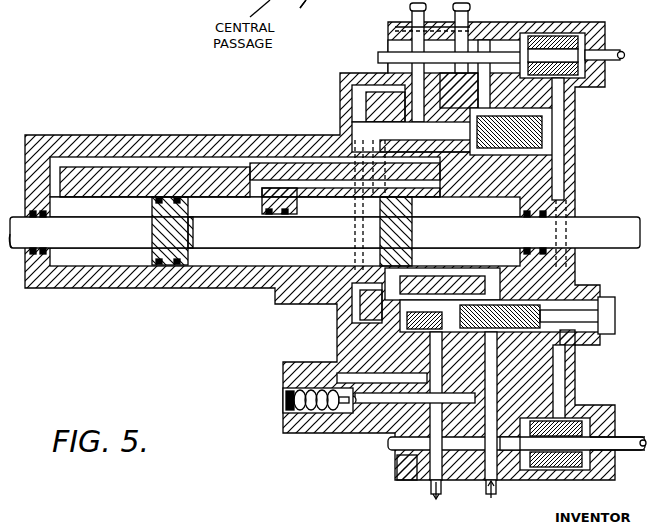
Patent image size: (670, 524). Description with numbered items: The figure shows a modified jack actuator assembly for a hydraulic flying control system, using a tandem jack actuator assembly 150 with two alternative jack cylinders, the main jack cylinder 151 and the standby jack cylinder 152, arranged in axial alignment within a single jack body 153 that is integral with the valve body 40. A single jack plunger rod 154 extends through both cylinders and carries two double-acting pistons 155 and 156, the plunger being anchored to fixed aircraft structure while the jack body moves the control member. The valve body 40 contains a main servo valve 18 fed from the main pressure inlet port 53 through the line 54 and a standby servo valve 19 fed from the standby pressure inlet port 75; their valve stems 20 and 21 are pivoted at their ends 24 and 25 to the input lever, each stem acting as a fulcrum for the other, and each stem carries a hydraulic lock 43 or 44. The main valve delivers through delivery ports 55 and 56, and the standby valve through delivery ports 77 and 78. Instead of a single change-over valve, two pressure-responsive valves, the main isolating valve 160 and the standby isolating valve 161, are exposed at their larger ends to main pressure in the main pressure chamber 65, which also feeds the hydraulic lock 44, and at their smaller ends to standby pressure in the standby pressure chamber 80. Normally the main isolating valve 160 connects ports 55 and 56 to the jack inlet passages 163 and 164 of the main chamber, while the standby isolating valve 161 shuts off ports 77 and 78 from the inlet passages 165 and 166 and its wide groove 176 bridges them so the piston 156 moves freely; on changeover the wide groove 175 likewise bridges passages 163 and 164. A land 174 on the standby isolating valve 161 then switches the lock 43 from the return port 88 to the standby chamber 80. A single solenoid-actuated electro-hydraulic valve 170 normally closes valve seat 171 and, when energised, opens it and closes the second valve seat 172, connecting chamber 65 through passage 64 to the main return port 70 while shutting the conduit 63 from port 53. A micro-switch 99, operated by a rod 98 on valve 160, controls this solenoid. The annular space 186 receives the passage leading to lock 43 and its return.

The main servo valve 18 is at (415, 249).
The standby servo valve 19 is at (486, 45).
The valve stem 20 is at (620, 446).
The valve stem 21 is at (612, 56).
The valve stem end 24 is at (643, 440).
The valve stem end 25 is at (615, 58).
The valve body 40 is at (512, 25).
The hydraulic lock 43 is at (565, 458).
The hydraulic lock 44 is at (572, 38).
The main pressure inlet port 53 is at (445, 415).
The line 54 is at (302, 13).
The pressure fluid delivery port 55 is at (400, 400).
The pressure fluid delivery port 56 is at (505, 448).
The conduit 63 is at (372, 383).
The passage 64 is at (535, 378).
The main pressure chamber 65 is at (558, 163).
The main return port 70 is at (400, 465).
The standby pressure inlet port 75 is at (462, 30).
The delivery port 77 is at (485, 93).
The delivery port 78 is at (400, 78).
The standby pressure chamber 80 is at (352, 142).
The return port 88 is at (413, 40).
The rod 98 is at (568, 332).
The micro-switch 99 is at (615, 315).
The tandem jack actuator assembly 150 is at (176, 270).
The main jack cylinder 151 is at (552, 192).
The standby jack cylinder 152 is at (225, 272).
The jack body 153 is at (190, 160).
The jack plunger rod 154 is at (628, 213).
The piston 155 is at (402, 236).
The piston 156 is at (157, 270).
The main isolating valve 160 is at (560, 305).
The standby isolating valve 161 is at (550, 138).
The jack inlet passage 163 is at (545, 300).
The jack inlet passage 164 is at (468, 275).
The jack inlet passage 165 is at (242, 165).
The jack inlet passage 166 is at (305, 178).
The solenoid-actuated electro-hydraulic valve 170 is at (290, 410).
The valve seat 171 is at (352, 400).
The second valve seat 172 is at (358, 415).
The land 174 is at (362, 125).
The wide groove 175 is at (430, 275).
The wide groove 176 is at (470, 138).
The annular space 186 is at (362, 312).